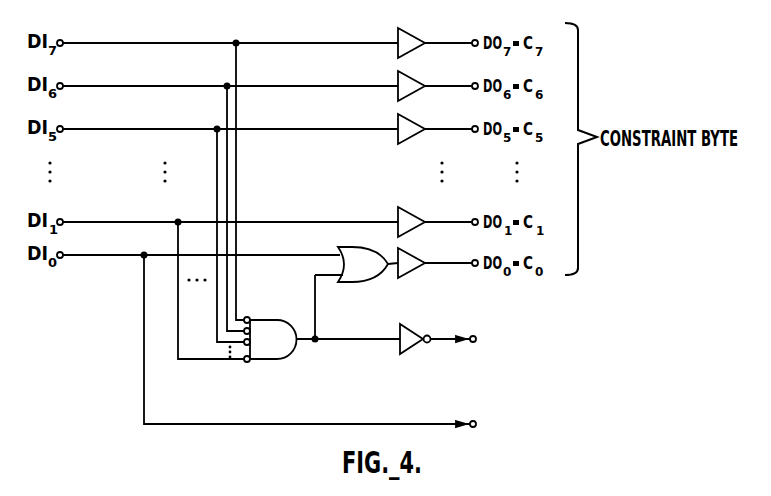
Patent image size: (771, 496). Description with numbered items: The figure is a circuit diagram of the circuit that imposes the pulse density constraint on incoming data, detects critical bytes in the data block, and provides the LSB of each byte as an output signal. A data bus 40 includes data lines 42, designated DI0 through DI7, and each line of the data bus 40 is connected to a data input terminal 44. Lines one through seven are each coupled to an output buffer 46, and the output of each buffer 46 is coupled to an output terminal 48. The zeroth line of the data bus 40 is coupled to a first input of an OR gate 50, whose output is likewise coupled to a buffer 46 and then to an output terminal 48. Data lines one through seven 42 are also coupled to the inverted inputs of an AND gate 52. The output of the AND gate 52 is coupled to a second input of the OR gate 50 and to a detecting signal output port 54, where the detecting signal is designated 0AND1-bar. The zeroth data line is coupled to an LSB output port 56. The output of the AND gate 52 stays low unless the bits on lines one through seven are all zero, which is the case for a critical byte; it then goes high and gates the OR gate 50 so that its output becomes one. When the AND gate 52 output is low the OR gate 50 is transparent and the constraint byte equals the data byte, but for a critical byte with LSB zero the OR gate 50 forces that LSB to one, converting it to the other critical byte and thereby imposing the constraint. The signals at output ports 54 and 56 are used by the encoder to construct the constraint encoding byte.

The data bus 40 is at (113, 30).
The data lines 42 is at (186, 49).
The data input terminal 44 is at (61, 39).
The output buffer 46 is at (405, 28).
The output terminal 48 is at (475, 39).
The OR gate 50 is at (368, 248).
The AND gate 52 is at (273, 320).
The detecting signal output port 54 is at (476, 337).
The LSB output port 56 is at (476, 421).